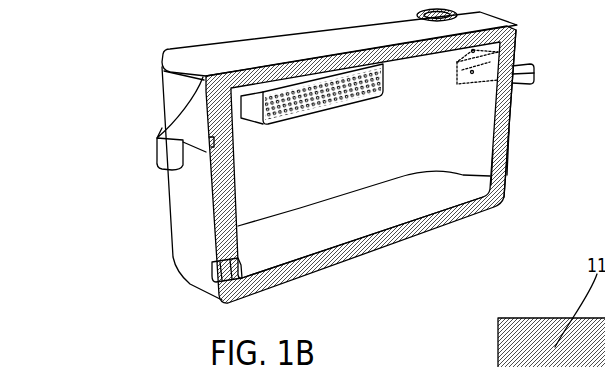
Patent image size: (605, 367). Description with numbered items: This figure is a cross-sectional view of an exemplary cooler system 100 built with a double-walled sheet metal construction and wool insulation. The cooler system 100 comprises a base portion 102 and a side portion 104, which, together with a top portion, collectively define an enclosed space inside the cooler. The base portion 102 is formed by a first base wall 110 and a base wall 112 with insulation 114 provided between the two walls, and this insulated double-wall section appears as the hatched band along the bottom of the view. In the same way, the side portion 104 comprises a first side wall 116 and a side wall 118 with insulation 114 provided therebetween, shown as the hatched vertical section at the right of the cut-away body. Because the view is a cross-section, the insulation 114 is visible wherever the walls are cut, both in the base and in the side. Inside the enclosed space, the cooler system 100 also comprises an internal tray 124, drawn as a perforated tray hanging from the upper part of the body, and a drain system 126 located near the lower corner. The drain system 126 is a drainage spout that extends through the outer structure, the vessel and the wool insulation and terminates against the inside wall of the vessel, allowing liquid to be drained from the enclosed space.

The cooler system 100 is at (122, 68).
The base portion 102 is at (320, 37).
The side portion 104 is at (513, 129).
The first base wall 110 is at (383, 250).
The base wall 112 is at (370, 227).
The insulation 114 is at (507, 110).
The first side wall 116 is at (507, 155).
The side wall 118 is at (493, 173).
The internal tray 124 is at (313, 92).
The drain system 126 is at (210, 270).